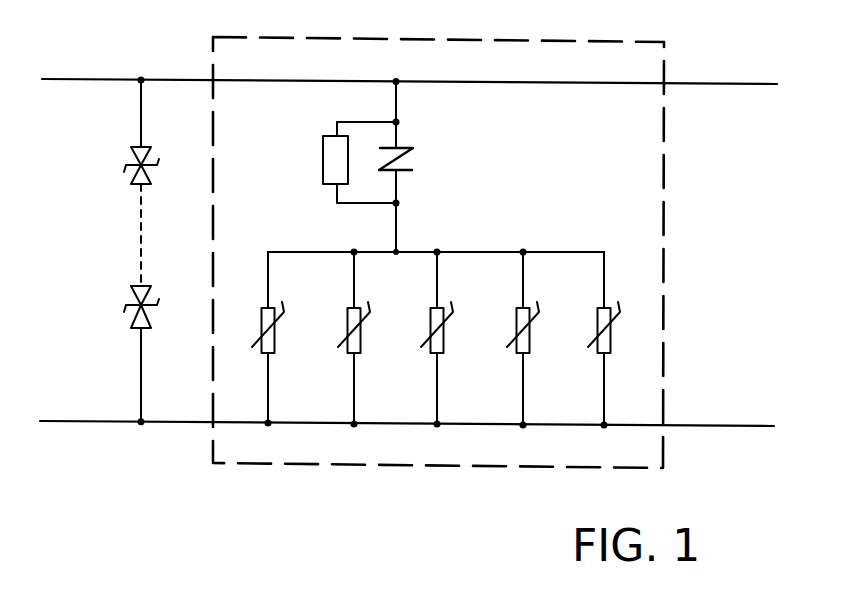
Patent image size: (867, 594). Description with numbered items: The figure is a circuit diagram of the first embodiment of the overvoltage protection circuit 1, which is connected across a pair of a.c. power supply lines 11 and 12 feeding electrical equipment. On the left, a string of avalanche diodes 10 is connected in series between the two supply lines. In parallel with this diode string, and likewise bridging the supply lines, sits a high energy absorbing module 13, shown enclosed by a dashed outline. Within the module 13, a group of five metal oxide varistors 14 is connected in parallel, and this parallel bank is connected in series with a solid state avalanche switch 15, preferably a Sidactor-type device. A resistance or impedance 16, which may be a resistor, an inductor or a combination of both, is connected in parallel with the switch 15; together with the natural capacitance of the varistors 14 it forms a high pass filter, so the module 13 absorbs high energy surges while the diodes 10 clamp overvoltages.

The overvoltage protection circuit 1 is at (185, 436).
The avalanche diodes 10 is at (128, 176).
The a.c. power supply line 11 is at (707, 84).
The a.c. power supply line 12 is at (702, 425).
The high energy absorbing module 13 is at (215, 53).
The metal oxide varistors 14 is at (262, 317).
The solid state avalanche switch 15 is at (414, 163).
The resistance or impedance 16 is at (322, 165).